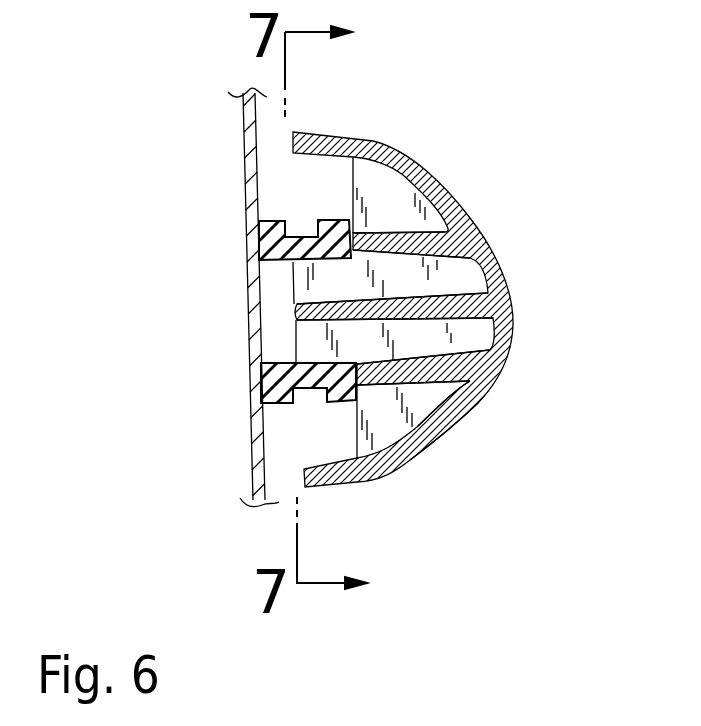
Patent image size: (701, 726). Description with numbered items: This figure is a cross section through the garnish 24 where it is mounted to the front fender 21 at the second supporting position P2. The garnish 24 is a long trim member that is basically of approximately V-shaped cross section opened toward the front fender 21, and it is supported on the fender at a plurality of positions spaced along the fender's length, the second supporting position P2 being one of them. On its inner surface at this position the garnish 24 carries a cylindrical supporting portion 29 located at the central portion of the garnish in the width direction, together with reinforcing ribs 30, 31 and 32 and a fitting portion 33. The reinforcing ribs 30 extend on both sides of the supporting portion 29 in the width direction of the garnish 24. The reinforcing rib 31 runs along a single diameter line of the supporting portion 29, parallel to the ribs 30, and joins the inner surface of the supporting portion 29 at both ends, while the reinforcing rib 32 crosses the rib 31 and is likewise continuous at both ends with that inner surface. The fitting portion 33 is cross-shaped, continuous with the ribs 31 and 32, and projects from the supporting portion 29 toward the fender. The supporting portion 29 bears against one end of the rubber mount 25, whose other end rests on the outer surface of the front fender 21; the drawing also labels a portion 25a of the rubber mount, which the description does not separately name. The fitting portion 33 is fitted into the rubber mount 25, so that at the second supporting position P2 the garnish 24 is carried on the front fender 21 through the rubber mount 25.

The front fender 21 is at (251, 333).
The garnish 24 is at (421, 190).
The rubber mount 25 is at (270, 405).
The upper boss 25a is at (300, 218).
The supporting portion 29 is at (418, 386).
The reinforcing ribs 30 is at (376, 190).
The reinforcing rib 31 is at (436, 343).
The reinforcing rib 32 is at (413, 297).
The fitting portion 33 is at (293, 303).
The second supporting position P2 is at (480, 230).